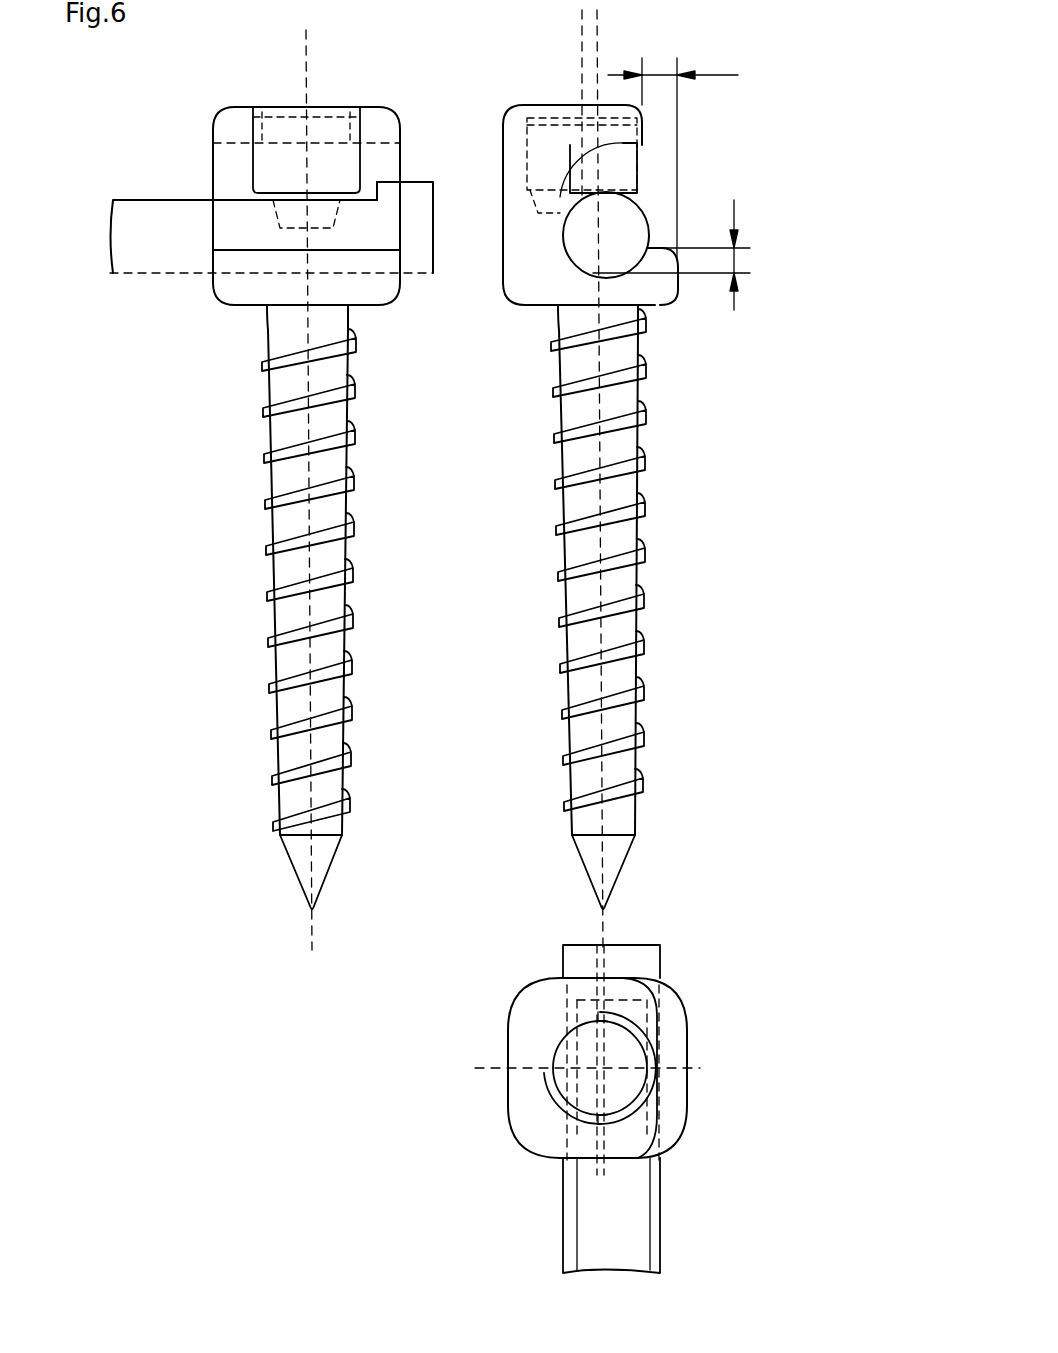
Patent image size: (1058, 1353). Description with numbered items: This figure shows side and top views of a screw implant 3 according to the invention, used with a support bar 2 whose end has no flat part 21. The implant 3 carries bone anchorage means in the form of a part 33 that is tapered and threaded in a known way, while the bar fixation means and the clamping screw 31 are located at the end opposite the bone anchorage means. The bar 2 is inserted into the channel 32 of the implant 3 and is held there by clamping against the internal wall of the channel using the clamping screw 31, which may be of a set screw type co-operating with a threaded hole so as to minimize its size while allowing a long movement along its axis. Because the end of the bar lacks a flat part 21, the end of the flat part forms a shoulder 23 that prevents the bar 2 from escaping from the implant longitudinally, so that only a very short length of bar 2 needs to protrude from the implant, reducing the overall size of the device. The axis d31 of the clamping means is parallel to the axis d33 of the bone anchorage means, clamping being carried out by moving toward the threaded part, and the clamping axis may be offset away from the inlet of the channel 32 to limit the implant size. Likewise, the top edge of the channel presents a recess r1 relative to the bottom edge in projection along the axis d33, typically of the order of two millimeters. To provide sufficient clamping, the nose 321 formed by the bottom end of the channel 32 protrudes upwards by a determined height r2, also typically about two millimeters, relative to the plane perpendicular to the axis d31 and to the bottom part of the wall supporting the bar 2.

The support bar 2 is at (408, 200).
The flat part 21 is at (193, 200).
The shoulder 23 is at (378, 187).
The implant 3 is at (257, 305).
The clamping screw 31 is at (282, 157).
The channel 32 is at (657, 240).
The nose 321 is at (655, 258).
The tapered and threaded part 33 is at (265, 528).
The axis of the clamping means d31 is at (578, 32).
The axis of the bone anchorage means d33 is at (603, 33).
The recess r1 is at (676, 152).
The height r2 is at (752, 255).